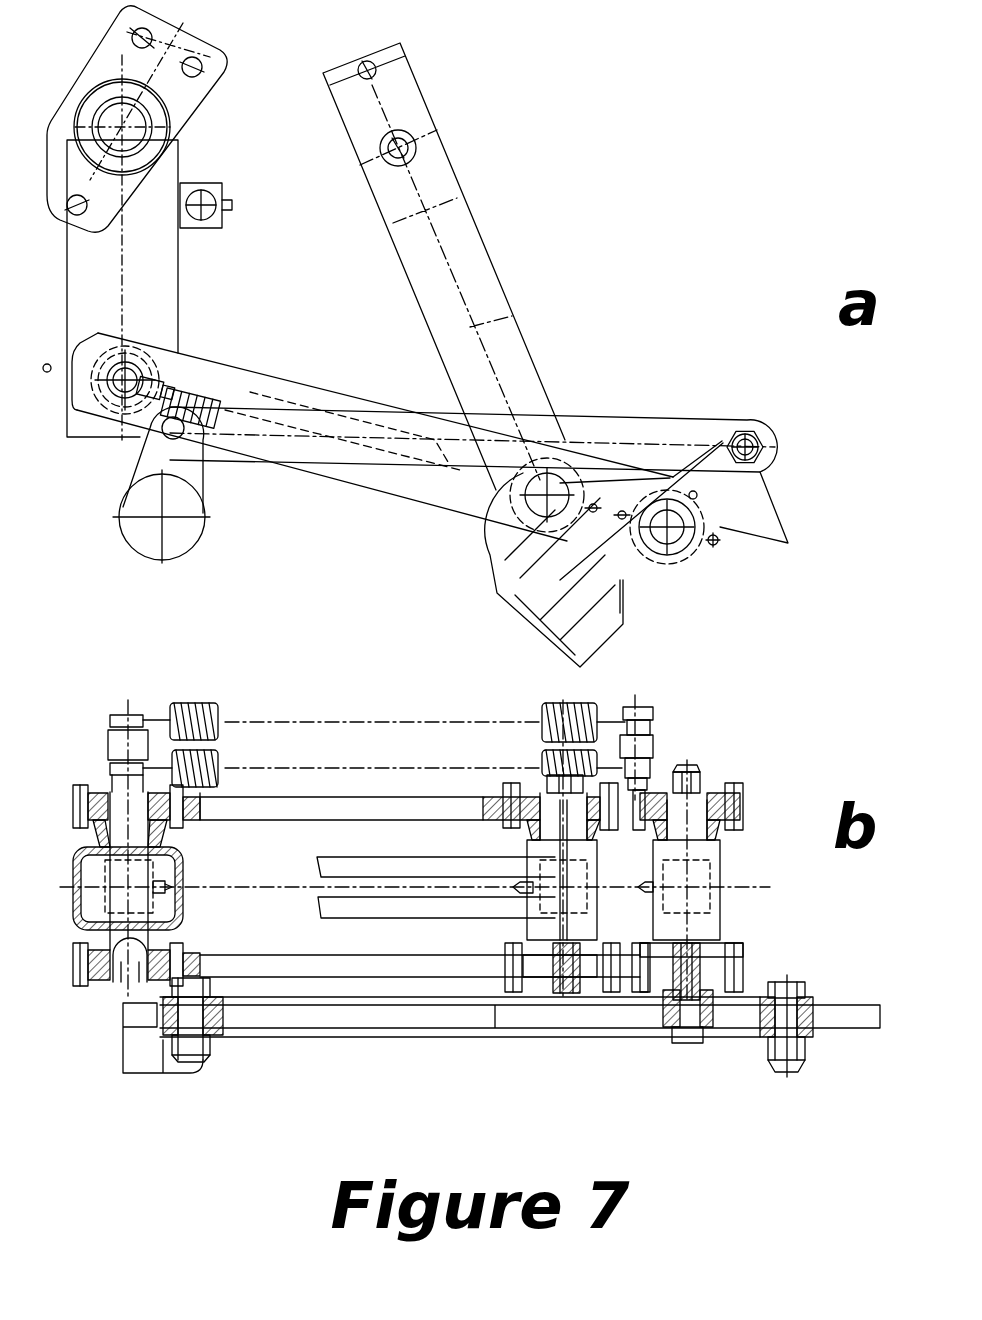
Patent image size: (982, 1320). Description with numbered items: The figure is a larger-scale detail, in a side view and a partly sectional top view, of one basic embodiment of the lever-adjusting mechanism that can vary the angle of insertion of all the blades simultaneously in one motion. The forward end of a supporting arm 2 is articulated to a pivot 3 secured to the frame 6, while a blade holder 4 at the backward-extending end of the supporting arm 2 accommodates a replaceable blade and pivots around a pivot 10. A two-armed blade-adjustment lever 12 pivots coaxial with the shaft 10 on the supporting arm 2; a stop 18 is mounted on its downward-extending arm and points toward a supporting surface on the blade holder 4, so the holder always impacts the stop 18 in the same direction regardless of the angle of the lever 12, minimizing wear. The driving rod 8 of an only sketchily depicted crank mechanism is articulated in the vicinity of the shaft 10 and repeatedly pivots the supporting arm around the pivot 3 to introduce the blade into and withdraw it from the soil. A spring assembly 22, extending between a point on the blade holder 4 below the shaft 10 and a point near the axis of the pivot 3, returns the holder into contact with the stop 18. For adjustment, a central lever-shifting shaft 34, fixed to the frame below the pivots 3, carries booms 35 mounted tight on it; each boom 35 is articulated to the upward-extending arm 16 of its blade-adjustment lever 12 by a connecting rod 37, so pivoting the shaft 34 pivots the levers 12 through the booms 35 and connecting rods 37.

In FIG. 7a, the supporting arm 2 is at (693, 577).
In FIG. 7b, the supporting arm 2 is at (287, 810).
In FIG. 7a, the pivot 3 is at (153, 363).
In FIG. 7b, the pivot 3 is at (132, 835).
In FIG. 7a, the blade holder 4 is at (627, 610).
In FIG. 7b, the blade holder 4 is at (653, 790).
In FIG. 7a, the frame 6 is at (160, 270).
In FIG. 7b, the frame 6 is at (185, 910).
In FIG. 7a, the driving rod 8 is at (462, 245).
In FIG. 7b, the pivot 10 is at (685, 878).
In FIG. 7a, the blade-adjustment lever 12 is at (720, 527).
In FIG. 7a, the upward-extending arm 16 is at (790, 430).
In FIG. 7a, the stop 18 is at (490, 600).
In FIG. 7b, the spring assembly 22 is at (218, 760).
In FIG. 7a, the central lever-shifting shaft 34 is at (145, 545).
In FIG. 7a, the boom 35 is at (150, 465).
In FIG. 7a, the connecting rod 37 is at (677, 435).
In FIG. 7b, the connecting rod 37 is at (540, 1037).